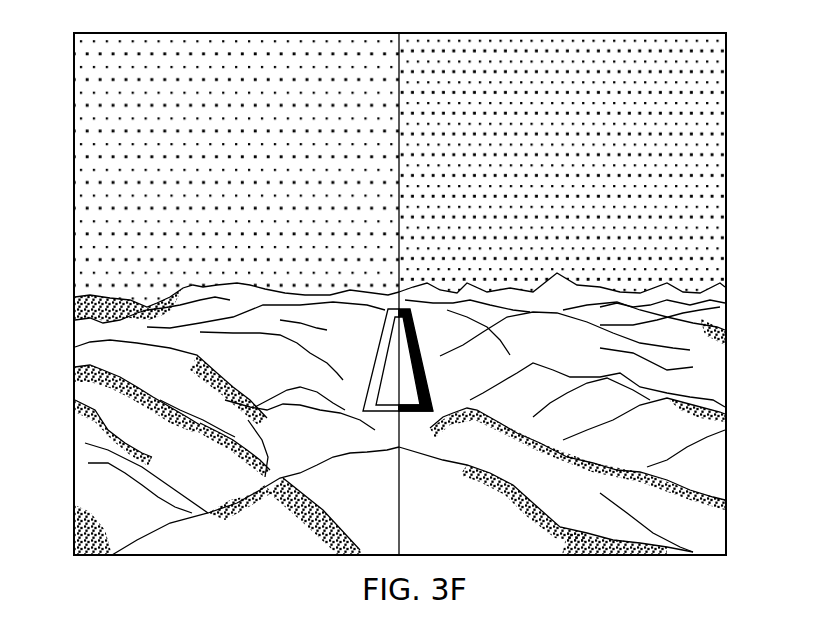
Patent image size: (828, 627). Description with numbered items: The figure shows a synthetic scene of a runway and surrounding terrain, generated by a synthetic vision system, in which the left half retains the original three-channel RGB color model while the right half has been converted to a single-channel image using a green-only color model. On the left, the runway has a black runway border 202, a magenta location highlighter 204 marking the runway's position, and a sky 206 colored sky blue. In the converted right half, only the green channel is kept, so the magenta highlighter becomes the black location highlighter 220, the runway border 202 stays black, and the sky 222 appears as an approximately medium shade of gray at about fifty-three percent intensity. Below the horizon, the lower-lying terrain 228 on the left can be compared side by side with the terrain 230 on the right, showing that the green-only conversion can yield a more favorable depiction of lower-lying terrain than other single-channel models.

The runway border 202 is at (592, 360).
The location highlighter 204 is at (207, 360).
The sky 206 is at (212, 143).
The location highlighter 220 is at (592, 386).
The sky 222 is at (571, 143).
The lower-lying terrain 228 is at (369, 500).
The terrain 230 is at (472, 500).